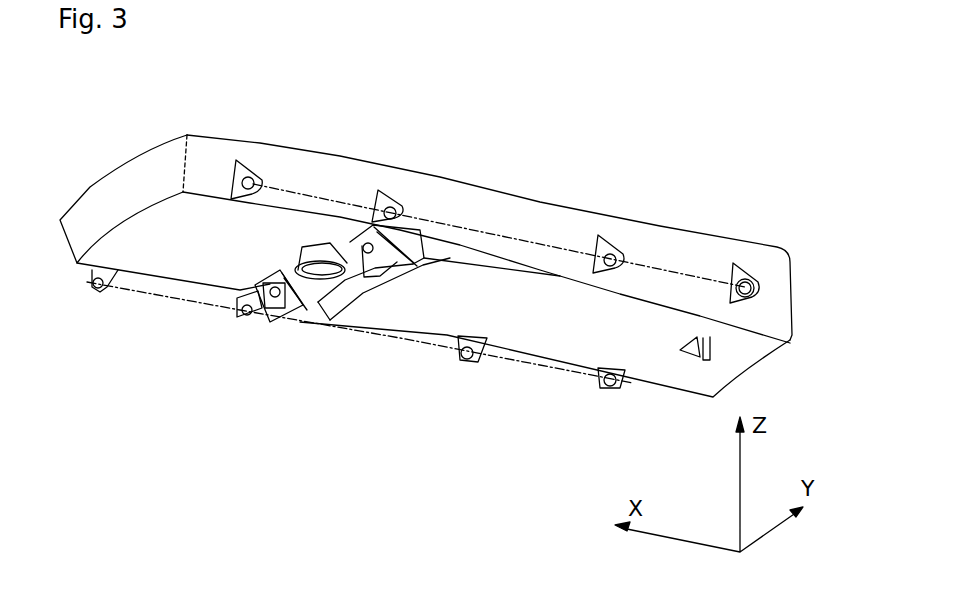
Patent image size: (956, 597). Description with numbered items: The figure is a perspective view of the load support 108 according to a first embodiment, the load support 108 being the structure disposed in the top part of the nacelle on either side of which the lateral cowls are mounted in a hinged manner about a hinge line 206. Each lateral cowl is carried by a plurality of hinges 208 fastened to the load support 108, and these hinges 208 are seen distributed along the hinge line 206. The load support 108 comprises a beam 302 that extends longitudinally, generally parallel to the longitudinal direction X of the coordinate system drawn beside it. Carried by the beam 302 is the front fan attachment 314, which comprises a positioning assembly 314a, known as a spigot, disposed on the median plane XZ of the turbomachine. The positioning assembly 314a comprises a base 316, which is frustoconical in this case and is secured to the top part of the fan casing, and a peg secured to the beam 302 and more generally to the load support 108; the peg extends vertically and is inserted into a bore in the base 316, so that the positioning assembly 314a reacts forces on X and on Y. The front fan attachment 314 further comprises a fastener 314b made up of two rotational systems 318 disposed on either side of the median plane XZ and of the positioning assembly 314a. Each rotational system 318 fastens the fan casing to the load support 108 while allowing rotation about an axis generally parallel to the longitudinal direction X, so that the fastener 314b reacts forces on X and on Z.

The load support 108 is at (527, 146).
The hinge line 206 is at (785, 237).
The hinges 208 is at (748, 272).
The beam 302 is at (625, 233).
The front fan attachment 314 is at (212, 380).
The positioning assembly 314a is at (293, 380).
The fastener 314b is at (378, 365).
The base 316 is at (302, 247).
The rotational systems 318 is at (260, 320).